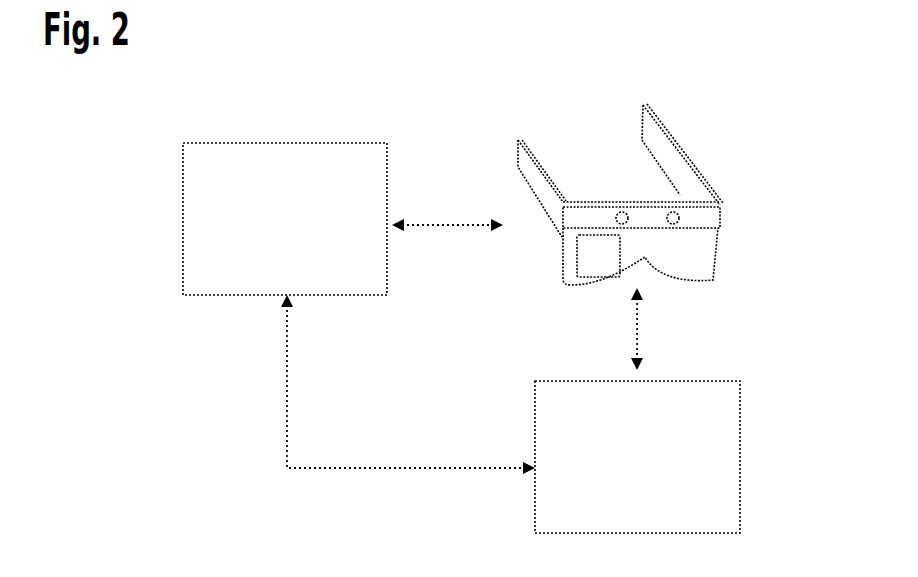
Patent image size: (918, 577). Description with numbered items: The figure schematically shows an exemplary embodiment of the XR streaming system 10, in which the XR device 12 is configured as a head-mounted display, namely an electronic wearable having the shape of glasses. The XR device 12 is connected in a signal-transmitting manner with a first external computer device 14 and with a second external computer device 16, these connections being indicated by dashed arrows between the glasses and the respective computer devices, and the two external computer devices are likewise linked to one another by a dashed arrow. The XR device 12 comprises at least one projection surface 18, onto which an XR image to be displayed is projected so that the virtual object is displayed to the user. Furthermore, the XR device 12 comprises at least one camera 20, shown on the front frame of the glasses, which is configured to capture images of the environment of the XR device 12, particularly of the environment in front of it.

The XR streaming system 10 is at (437, 133).
The XR device 12 is at (708, 215).
The first external computer device 14 is at (230, 143).
The second external computer device 16 is at (740, 456).
The projection surface 18 is at (583, 278).
The camera 20 is at (622, 212).